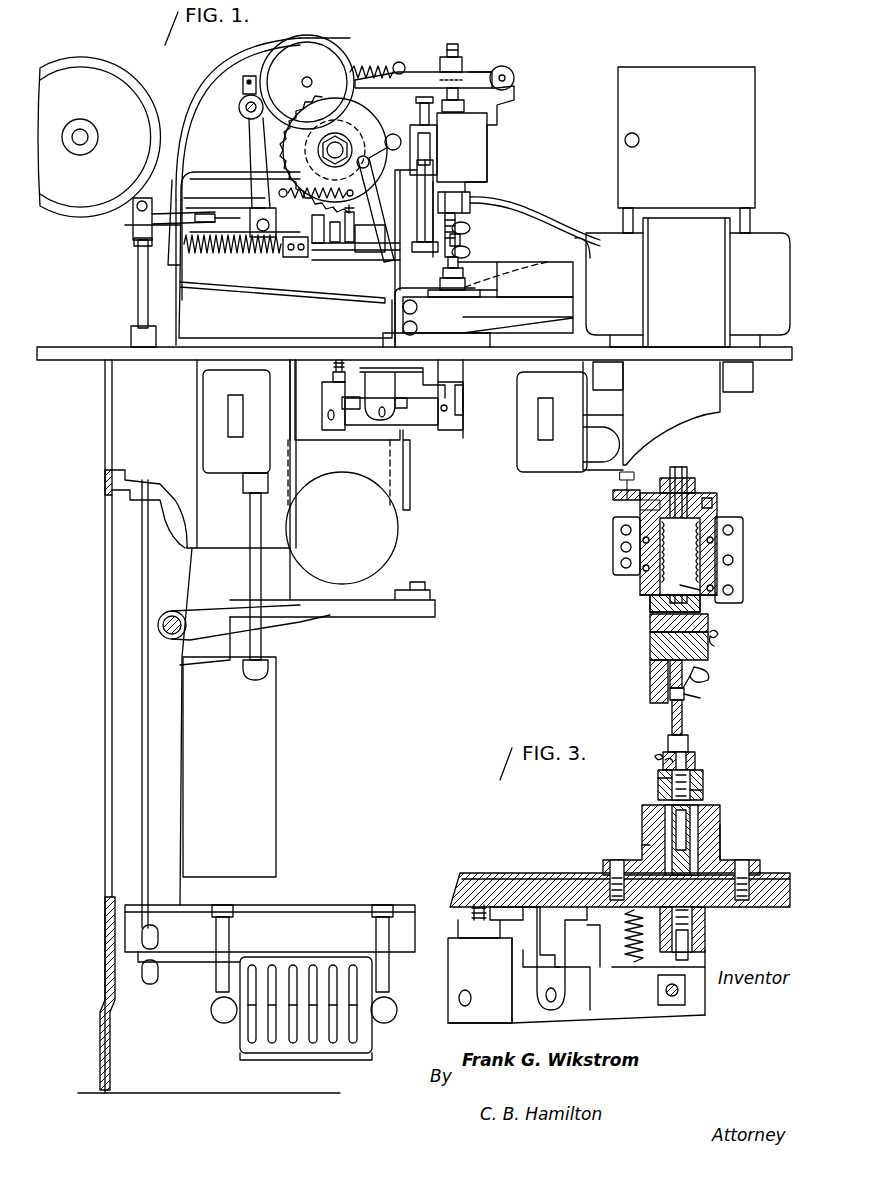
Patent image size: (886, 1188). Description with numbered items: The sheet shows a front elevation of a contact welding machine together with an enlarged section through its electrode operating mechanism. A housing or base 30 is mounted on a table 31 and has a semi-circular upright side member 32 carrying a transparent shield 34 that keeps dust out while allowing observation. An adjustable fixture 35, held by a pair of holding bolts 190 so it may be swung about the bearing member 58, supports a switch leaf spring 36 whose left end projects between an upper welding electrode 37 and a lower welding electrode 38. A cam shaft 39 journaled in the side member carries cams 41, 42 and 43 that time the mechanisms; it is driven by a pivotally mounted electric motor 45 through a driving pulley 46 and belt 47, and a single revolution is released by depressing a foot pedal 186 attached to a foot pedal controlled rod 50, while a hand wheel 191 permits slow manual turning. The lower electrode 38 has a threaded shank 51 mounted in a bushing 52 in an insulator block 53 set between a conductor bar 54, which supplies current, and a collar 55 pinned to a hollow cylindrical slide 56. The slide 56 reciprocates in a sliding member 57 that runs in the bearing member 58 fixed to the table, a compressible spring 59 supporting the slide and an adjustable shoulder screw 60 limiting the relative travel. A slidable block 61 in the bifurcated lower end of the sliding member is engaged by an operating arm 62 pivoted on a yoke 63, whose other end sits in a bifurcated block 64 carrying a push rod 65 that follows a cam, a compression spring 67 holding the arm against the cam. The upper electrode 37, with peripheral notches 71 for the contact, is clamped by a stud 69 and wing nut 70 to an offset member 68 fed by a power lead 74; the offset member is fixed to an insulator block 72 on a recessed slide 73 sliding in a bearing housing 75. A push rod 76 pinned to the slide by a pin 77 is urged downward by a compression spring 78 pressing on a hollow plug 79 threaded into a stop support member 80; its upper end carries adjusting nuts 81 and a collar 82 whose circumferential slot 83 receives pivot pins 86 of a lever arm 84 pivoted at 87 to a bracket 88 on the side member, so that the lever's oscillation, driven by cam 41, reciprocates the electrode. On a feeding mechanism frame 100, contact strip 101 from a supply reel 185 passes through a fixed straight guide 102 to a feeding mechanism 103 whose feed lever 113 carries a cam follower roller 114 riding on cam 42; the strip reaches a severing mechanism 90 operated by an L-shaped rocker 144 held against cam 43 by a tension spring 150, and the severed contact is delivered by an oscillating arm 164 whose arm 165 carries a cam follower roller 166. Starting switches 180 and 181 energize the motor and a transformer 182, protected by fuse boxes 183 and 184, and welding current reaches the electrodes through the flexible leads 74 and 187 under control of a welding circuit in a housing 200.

In FIG. 1, the housing or base 30 is at (175, 313).
In FIG. 1, the table 31 is at (125, 355).
In FIG. 3, the table 31 is at (512, 866).
In FIG. 1, the upright side member 32 is at (226, 85).
In FIG. 1, the shield 34 is at (246, 68).
In FIG. 1, the adjustable fixture 35 is at (548, 308).
In FIG. 1, the switch or leaf spring 36 is at (490, 262).
In FIG. 1, the upper welding electrode 37 is at (465, 212).
In FIG. 3, the upper welding electrode 37 is at (670, 722).
In FIG. 1, the lower welding electrode 38 is at (466, 262).
In FIG. 3, the lower welding electrode 38 is at (690, 744).
In FIG. 1, the cam shaft 39 is at (335, 145).
In FIG. 1, the cam 41 is at (255, 182).
In FIG. 1, the cam 42 is at (368, 155).
In FIG. 1, the cam 43 is at (448, 147).
In FIG. 1, the electric motor 45 is at (105, 480).
In FIG. 1, the driving pulley 46 is at (385, 535).
In FIG. 1, the belt 47 is at (412, 480).
In FIG. 1, the foot pedal controlled rod 50 is at (148, 760).
In FIG. 3, the threaded shank 51 is at (698, 760).
In FIG. 3, the bushing 52 is at (706, 780).
In FIG. 3, the insulator block 53 is at (660, 776).
In FIG. 3, the conductor bar 54 is at (664, 760).
In FIG. 3, the collar 55 is at (706, 796).
In FIG. 3, the hollow cylindrical slide 56 is at (660, 822).
In FIG. 3, the sliding member 57 is at (722, 832).
In FIG. 3, the bearing member 58 is at (650, 838).
In FIG. 3, the compressible spring 59 is at (708, 908).
In FIG. 3, the adjustable shoulder screw 60 is at (694, 940).
In FIG. 3, the slidable block 61 is at (658, 990).
In FIG. 1, the operating arm 62 is at (428, 414).
In FIG. 3, the operating arm 62 is at (522, 982).
In FIG. 1, the yoke 63 is at (388, 405).
In FIG. 3, the yoke 63 is at (540, 942).
In FIG. 3, the bifurcated block 64 is at (452, 1025).
In FIG. 3, the push rod 65 is at (470, 922).
In FIG. 3, the compression spring 67 is at (625, 968).
In FIG. 3, the offset member 68 is at (652, 646).
In FIG. 3, the stud 69 is at (700, 698).
In FIG. 3, the wing nut 70 is at (710, 674).
In FIG. 1, the peripheral notches 71 is at (466, 240).
In FIG. 3, the insulator block 72 is at (710, 626).
In FIG. 3, the recessed slide 73 is at (725, 608).
In FIG. 1, the power lead 74 is at (566, 238).
In FIG. 3, the power lead 74 is at (730, 642).
In FIG. 3, the bearing housing 75 is at (716, 548).
In FIG. 3, the push rod 76 is at (688, 478).
In FIG. 3, the pin 77 is at (660, 592).
In FIG. 3, the compression spring 78 is at (690, 585).
In FIG. 3, the hollow plug 79 is at (697, 489).
In FIG. 3, the stop support member 80 is at (714, 506).
In FIG. 1, the adjusting nuts 81 is at (460, 70).
In FIG. 1, the collar 82 is at (466, 103).
In FIG. 1, the circumferential slot 83 is at (488, 82).
In FIG. 1, the lever arm 84 is at (402, 85).
In FIG. 1, the pivot pin 86 is at (468, 78).
In FIG. 1, the pivot 87 is at (512, 80).
In FIG. 1, the bracket 88 is at (496, 114).
In FIG. 1, the severing mechanism 90 is at (432, 200).
In FIG. 1, the feeding mechanism frame 100 is at (207, 275).
In FIG. 1, the contact strip 101 is at (110, 222).
In FIG. 1, the fixed straight guide 102 is at (140, 226).
In FIG. 1, the feeding mechanism 103 is at (382, 255).
In FIG. 1, the feed lever 113 is at (335, 253).
In FIG. 1, the cam follower roller 114 is at (428, 148).
In FIG. 1, the L-shaped rocker 144 is at (396, 62).
In FIG. 1, the tension spring 150 is at (370, 68).
In FIG. 1, the oscillating arm 164 is at (240, 124).
In FIG. 1, the arm 165 is at (265, 170).
In FIG. 1, the cam follower roller 166 is at (318, 184).
In FIG. 1, the starting switch 180 is at (230, 420).
In FIG. 1, the starting switch 181 is at (545, 438).
In FIG. 1, the transformer 182 is at (676, 230).
In FIG. 1, the fuse box 183 is at (276, 700).
In FIG. 1, the fuse box 184 is at (740, 382).
In FIG. 1, the supply reel 185 is at (58, 80).
In FIG. 1, the foot pedal 186 is at (266, 1050).
In FIG. 1, the flexible lead 187 is at (586, 262).
In FIG. 1, the holding bolts 190 is at (403, 308).
In FIG. 1, the hand wheel 191 is at (300, 52).
In FIG. 1, the housing 200 is at (673, 80).